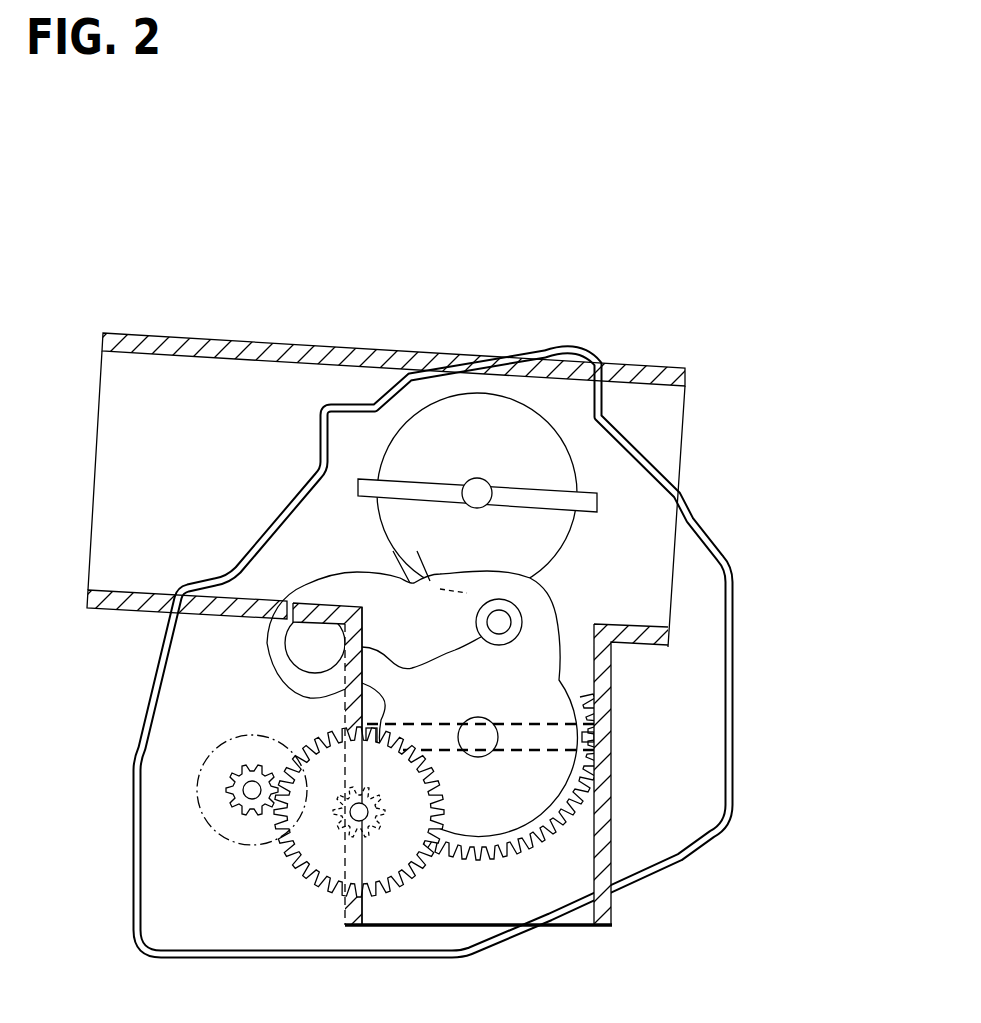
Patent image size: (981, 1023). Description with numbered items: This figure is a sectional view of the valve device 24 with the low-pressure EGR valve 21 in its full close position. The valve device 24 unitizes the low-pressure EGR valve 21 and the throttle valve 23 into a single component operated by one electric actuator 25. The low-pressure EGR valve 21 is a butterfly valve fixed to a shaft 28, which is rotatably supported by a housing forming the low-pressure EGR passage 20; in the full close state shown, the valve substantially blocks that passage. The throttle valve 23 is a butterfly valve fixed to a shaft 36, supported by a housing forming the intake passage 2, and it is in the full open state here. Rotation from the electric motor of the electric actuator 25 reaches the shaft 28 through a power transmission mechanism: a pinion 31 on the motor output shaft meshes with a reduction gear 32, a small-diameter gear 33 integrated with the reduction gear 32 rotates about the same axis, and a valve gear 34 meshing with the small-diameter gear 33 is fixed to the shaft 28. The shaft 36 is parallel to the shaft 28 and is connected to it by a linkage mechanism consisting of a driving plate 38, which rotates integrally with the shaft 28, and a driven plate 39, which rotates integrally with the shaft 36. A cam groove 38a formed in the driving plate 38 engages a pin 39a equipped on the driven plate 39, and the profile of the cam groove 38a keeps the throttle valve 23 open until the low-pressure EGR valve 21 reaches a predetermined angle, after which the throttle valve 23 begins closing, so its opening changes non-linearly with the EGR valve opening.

The intake passage 2 is at (255, 373).
The low-pressure EGR passage 20 is at (502, 903).
The low-pressure EGR valve 21 is at (600, 740).
The throttle valve 23 is at (595, 497).
The valve device 24 is at (712, 295).
The electric actuator 25 is at (218, 832).
The shaft 28 is at (507, 723).
The pinion 31 is at (249, 813).
The reduction gear 32 is at (330, 893).
The small-diameter gear 33 is at (365, 827).
The valve gear 34 is at (386, 826).
The shaft 36 is at (471, 478).
The driving plate 38 is at (540, 683).
The cam groove 38a is at (475, 627).
The driven plate 39 is at (555, 538).
The pin 39a is at (514, 606).